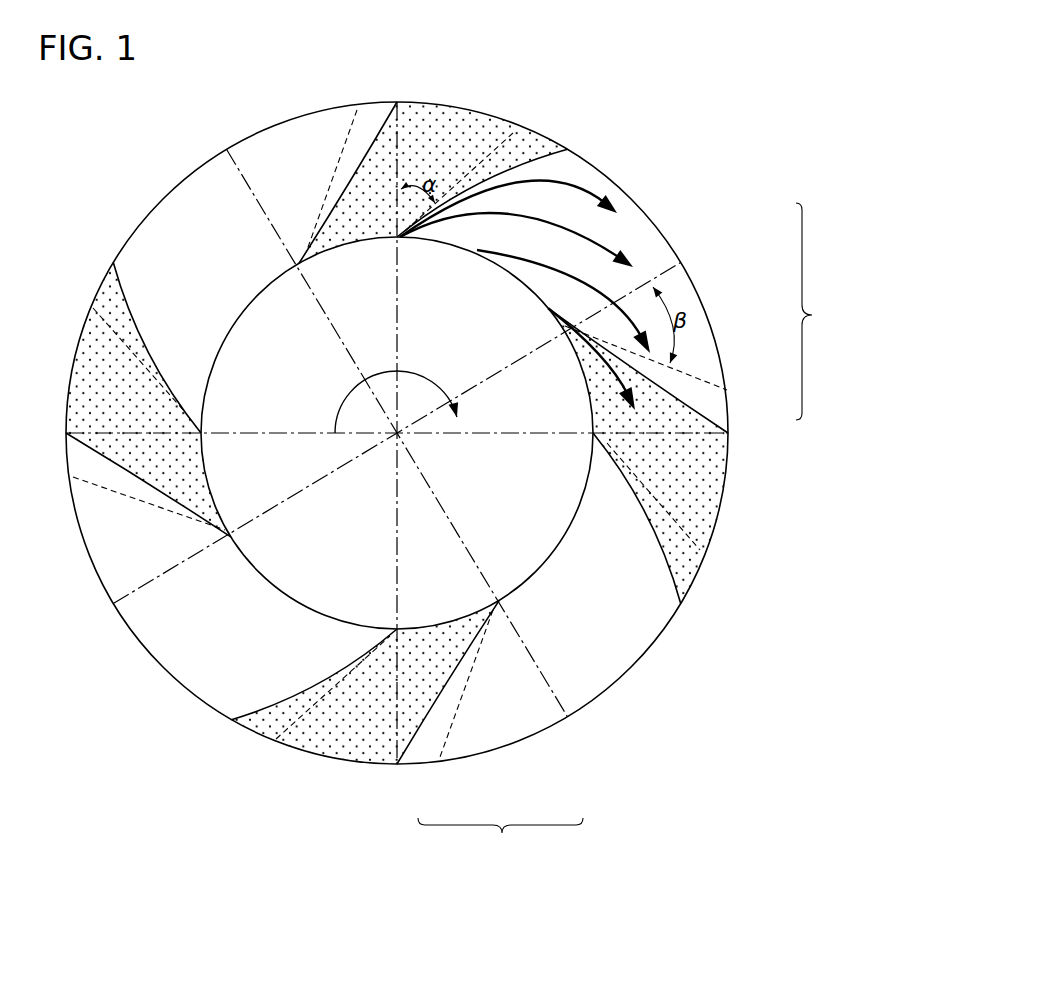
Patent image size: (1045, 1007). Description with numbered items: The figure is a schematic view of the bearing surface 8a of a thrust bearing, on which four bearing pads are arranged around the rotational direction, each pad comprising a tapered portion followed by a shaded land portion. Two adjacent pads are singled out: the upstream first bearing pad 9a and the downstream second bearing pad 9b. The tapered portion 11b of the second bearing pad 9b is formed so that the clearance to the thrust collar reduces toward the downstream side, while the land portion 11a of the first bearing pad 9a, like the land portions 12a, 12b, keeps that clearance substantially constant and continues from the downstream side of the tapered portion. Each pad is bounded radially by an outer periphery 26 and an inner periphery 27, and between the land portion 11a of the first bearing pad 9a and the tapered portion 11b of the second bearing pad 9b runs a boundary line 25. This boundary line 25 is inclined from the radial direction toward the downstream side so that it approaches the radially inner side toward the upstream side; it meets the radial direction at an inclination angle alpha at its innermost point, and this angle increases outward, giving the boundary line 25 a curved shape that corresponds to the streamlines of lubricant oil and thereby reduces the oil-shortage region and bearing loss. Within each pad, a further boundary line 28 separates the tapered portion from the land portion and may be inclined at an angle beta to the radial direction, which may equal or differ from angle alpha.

The bearing surface 8a is at (665, 157).
The outer periphery 26 is at (622, 190).
The inner periphery 27 is at (492, 256).
The boundary line 25 is at (523, 150).
The boundary line 28 is at (707, 417).
The land portion 11a is at (643, 242).
The land portion 12a is at (660, 412).
The first bearing pad 9a is at (819, 311).
The land portion 12b is at (413, 707).
The tapered portion 11b is at (517, 710).
The second bearing pad 9b is at (500, 843).